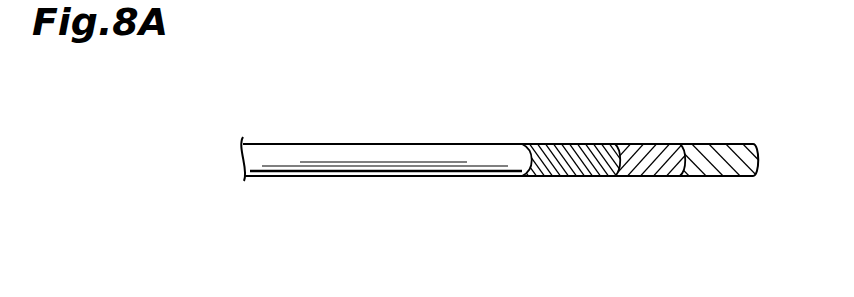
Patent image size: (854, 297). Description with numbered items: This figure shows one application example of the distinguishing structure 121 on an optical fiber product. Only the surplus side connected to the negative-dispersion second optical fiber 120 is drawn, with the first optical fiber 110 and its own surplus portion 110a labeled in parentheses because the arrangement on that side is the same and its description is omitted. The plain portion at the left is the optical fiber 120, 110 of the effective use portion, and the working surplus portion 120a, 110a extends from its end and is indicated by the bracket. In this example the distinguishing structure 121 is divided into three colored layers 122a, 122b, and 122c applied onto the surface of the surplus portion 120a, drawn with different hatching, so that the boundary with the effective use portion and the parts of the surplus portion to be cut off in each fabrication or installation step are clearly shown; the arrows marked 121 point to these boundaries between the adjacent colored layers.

The second optical fiber 120 is at (499, 131).
The first optical fiber 110 is at (380, 143).
The working surplus portion 120a is at (640, 167).
The working surplus portion 110a is at (640, 167).
The distinguishing structure 121 is at (522, 184).
The colored layer 122a is at (558, 177).
The colored layer 122b is at (638, 177).
The colored layer 122c is at (713, 177).